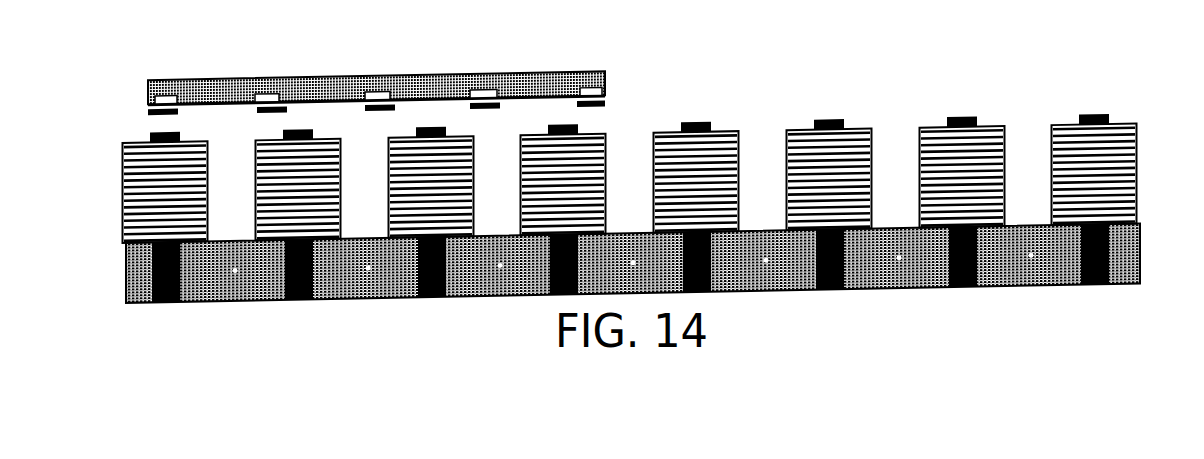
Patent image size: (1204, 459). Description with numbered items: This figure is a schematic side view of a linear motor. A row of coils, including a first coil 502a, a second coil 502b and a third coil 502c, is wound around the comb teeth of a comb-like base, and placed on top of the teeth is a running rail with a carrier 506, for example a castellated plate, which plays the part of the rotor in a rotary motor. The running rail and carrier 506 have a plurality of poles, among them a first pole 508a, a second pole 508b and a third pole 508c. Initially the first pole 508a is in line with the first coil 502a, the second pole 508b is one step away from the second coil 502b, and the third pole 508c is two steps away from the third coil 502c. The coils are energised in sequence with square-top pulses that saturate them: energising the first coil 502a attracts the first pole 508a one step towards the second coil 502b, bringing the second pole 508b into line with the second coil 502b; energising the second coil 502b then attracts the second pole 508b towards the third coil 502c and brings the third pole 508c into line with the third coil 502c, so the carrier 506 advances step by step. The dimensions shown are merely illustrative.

The first coil 502a is at (146, 303).
The second coil 502b is at (270, 302).
The third coil 502c is at (401, 298).
The carrier 506 is at (578, 75).
The first pole 508a is at (163, 80).
The second pole 508b is at (268, 80).
The third pole 508c is at (378, 80).